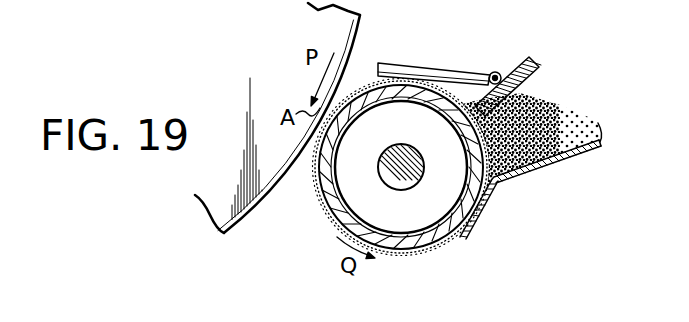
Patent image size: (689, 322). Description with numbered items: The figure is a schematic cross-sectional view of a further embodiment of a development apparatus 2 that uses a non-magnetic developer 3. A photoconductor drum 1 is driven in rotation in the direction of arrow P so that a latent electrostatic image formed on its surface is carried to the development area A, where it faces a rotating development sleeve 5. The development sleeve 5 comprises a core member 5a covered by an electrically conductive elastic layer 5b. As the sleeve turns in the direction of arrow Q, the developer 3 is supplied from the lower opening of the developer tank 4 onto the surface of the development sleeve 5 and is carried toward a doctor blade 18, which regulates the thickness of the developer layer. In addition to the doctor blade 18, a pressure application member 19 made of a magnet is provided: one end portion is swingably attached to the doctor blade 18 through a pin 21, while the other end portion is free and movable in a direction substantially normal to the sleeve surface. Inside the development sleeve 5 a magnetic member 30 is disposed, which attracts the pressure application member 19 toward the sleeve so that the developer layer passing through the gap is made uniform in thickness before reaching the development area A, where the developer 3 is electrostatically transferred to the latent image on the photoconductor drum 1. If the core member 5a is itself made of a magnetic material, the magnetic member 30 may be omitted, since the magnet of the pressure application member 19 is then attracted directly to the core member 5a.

The photoconductor drum 1 is at (247, 216).
The developing device 2 is at (521, 46).
The developer 3 is at (531, 181).
The developer tank 4 is at (519, 174).
The development sleeve 5 is at (384, 196).
The core member 5a is at (449, 232).
The electrically conductive elastic layer 5b is at (412, 247).
The doctor blade 18 is at (540, 73).
The pressure application member 19 is at (423, 63).
The pin 21 is at (493, 73).
The magnetic member 30 is at (388, 180).